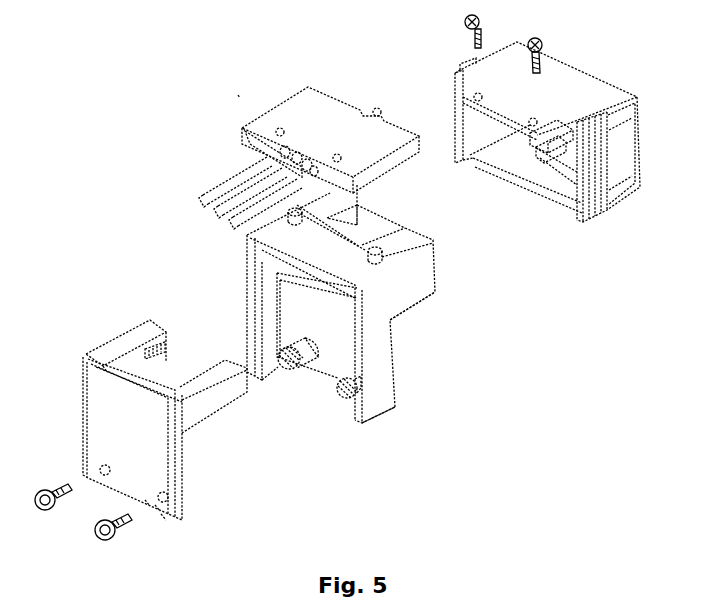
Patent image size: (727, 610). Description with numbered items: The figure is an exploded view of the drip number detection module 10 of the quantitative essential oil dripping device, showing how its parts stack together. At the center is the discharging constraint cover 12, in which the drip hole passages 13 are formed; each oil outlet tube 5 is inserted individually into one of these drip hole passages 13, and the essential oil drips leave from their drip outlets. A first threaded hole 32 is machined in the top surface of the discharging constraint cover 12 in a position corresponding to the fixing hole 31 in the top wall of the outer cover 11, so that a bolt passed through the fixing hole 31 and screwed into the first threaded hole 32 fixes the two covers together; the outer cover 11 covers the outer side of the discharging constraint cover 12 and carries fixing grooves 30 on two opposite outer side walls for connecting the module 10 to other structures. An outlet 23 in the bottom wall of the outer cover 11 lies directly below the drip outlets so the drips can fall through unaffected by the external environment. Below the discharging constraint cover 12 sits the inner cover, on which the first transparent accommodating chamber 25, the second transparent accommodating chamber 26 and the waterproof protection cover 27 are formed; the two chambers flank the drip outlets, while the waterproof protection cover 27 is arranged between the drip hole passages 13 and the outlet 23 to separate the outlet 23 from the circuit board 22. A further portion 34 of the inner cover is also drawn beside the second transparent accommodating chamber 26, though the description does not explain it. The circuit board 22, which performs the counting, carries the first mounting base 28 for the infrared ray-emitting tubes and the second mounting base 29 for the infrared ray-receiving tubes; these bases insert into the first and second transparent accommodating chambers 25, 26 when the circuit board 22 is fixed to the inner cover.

The oil outlet tube 5 is at (232, 187).
The drip number detection module 10 is at (238, 95).
The outer cover 11 is at (607, 83).
The discharging constraint cover 12 is at (312, 113).
The drip hole passages 13 is at (260, 157).
The circuit board 22 is at (102, 427).
The outlet 23 is at (557, 163).
The first transparent accommodating chamber 25 is at (358, 217).
The second transparent accommodating chamber 26 is at (425, 268).
The waterproof protection cover 27 is at (333, 333).
The first mounting base 28 is at (133, 343).
The second mounting base 29 is at (217, 400).
The fixing grooves 30 is at (460, 65).
The fixing hole 31 is at (465, 92).
The first threaded hole 32 is at (276, 130).
The tab 34 is at (380, 348).